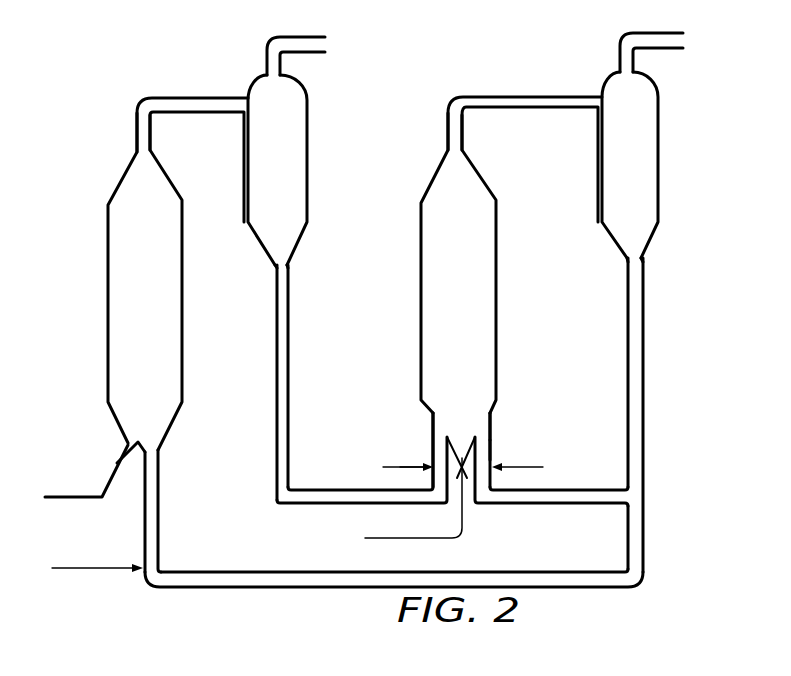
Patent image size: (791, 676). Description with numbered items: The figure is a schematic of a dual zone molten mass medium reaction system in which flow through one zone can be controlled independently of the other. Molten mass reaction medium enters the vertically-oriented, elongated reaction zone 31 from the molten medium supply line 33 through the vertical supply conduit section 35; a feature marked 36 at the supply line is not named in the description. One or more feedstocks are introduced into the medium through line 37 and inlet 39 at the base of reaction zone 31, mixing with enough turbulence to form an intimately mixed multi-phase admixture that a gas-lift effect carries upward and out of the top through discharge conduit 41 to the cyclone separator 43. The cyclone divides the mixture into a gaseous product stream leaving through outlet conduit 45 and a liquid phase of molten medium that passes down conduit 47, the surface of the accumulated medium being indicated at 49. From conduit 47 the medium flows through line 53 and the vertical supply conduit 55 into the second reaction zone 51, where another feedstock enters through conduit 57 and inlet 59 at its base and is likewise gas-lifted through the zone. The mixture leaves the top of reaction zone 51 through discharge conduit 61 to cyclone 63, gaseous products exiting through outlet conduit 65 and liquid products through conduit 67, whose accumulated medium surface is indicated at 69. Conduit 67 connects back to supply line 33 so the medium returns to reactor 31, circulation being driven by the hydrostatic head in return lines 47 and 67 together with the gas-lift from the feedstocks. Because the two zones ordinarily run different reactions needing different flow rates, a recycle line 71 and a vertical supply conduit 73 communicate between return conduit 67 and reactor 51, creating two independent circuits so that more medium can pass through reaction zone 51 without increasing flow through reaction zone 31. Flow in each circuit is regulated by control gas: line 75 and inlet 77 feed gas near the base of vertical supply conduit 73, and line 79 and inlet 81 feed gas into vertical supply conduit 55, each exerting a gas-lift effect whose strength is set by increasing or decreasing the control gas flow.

The reaction zone 31 is at (131, 242).
The molten medium supply line 33 is at (322, 582).
The vertical supply conduit section 35 is at (150, 525).
The feed inlet 36 is at (80, 567).
The line 37 is at (113, 467).
The inlet 39 is at (128, 437).
The discharge conduit 41 is at (193, 107).
The cyclone separator 43 is at (283, 152).
The outlet conduit 45 is at (280, 48).
The conduit 47 is at (291, 366).
The surface of accumulated molten medium 49 is at (284, 271).
The reaction zone 51 is at (430, 292).
The line 53 is at (320, 497).
The vertical supply conduit 55 is at (433, 437).
The conduit 57 is at (463, 530).
The inlet 59 is at (463, 442).
The discharge conduit 61 is at (505, 100).
The cyclone 63 is at (653, 167).
The outlet conduit 65 is at (642, 43).
The conduit 67 is at (645, 415).
The surface of accumulated molten medium 69 is at (633, 273).
The recycle line 71 is at (588, 488).
The vertical supply conduit 73 is at (492, 435).
The line 75 is at (530, 466).
The inlet 77 is at (497, 455).
The line 79 is at (397, 467).
The inlet 81 is at (428, 474).